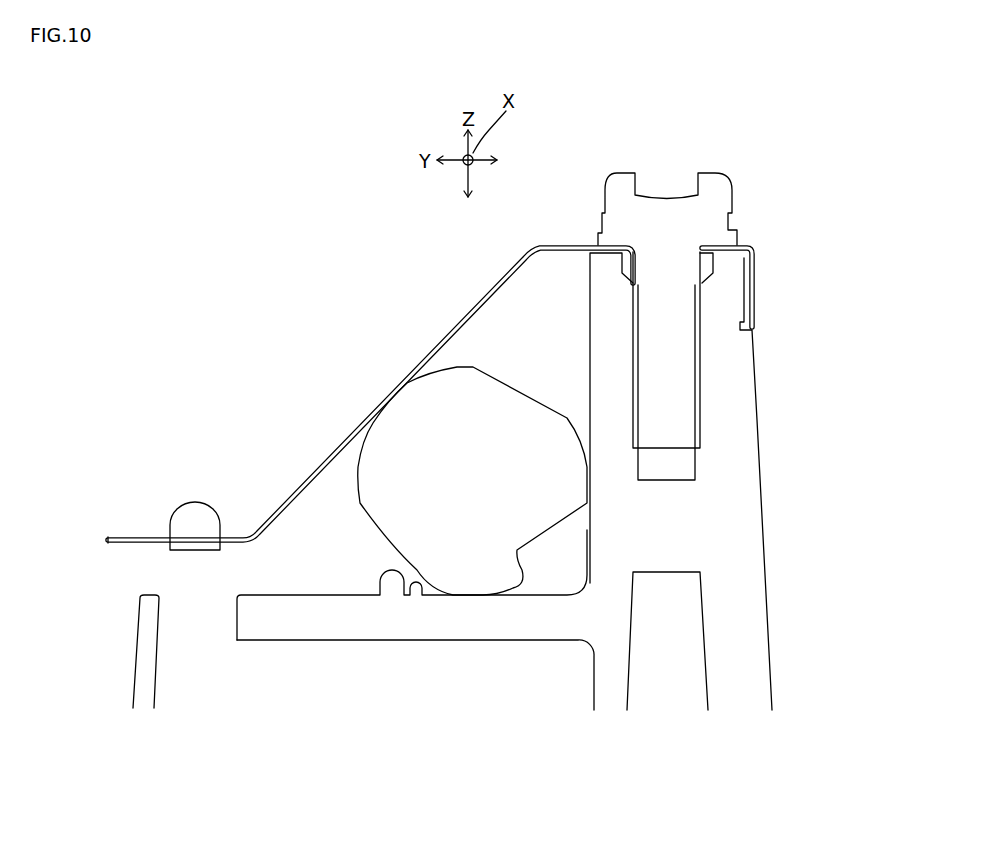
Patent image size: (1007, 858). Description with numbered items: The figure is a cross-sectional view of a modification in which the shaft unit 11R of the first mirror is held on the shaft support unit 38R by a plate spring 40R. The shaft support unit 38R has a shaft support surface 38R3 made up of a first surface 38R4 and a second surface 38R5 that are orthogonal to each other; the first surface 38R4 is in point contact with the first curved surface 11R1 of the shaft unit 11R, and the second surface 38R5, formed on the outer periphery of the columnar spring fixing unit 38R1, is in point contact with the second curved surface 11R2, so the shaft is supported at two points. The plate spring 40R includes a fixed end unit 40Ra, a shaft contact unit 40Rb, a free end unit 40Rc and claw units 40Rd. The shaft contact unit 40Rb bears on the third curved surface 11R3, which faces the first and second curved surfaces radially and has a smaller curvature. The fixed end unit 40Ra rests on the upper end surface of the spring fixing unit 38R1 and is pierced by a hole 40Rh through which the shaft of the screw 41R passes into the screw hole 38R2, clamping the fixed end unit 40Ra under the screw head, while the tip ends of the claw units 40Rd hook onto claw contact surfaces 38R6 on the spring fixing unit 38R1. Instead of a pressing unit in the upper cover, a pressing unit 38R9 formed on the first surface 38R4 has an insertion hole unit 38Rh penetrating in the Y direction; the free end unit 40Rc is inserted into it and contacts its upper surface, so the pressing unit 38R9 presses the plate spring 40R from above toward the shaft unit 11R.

The plate spring 40R is at (450, 326).
The fixed end unit 40Ra is at (715, 240).
The shaft contact unit 40Rb is at (337, 452).
The free end unit 40Rc is at (140, 540).
The claw unit 40Rd is at (752, 260).
The hole 40Rh is at (700, 246).
The screw 41R is at (625, 173).
The shaft support unit 38R is at (757, 356).
The spring fixing unit 38R1 is at (732, 410).
The screw hole 38R2 is at (677, 472).
The shaft support surface 38R3 is at (538, 753).
The first surface 38R4 is at (412, 595).
The second surface 38R5 is at (583, 573).
The claw contact surface 38R6 is at (748, 293).
The pressing unit 38R9 is at (195, 503).
The insertion hole unit 38Rh is at (195, 571).
The shaft unit 11R is at (557, 530).
The first curved surface 11R1 is at (477, 597).
The second curved surface 11R2 is at (588, 488).
The third curved surface 11R3 is at (390, 393).